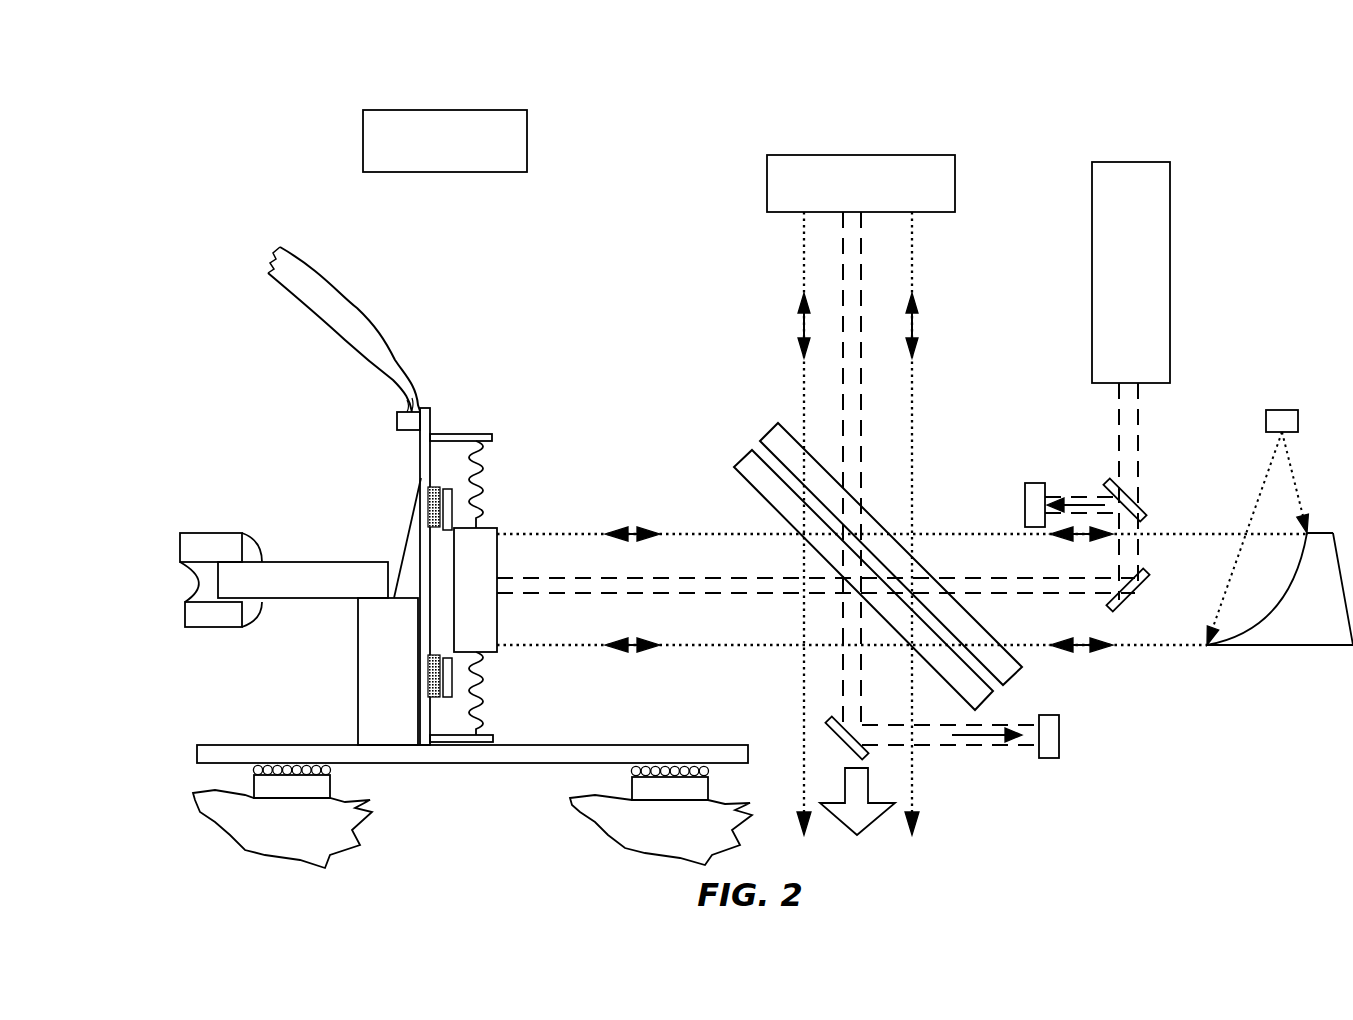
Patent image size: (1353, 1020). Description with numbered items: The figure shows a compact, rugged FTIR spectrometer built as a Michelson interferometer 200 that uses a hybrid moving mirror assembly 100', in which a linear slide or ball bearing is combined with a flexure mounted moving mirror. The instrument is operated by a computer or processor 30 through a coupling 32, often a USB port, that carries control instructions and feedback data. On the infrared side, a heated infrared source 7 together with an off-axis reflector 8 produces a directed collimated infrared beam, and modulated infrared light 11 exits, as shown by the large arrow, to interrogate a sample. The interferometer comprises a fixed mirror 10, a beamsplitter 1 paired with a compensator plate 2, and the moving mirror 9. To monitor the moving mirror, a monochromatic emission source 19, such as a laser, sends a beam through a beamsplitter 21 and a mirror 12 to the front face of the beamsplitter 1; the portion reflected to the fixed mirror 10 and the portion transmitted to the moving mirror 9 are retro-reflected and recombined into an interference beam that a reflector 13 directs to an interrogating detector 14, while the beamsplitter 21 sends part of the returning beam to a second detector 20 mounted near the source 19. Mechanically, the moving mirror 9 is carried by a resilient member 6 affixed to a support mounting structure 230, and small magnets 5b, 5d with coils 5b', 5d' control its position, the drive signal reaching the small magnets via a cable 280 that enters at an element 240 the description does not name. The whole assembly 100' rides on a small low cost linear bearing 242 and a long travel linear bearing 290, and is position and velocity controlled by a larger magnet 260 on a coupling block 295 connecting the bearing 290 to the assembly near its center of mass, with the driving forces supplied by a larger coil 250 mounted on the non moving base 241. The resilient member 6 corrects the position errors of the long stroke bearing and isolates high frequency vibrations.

The interferometer 200 is at (340, 55).
The hybrid moving mirror assembly 100' is at (176, 217).
The computer or processor 30 is at (445, 141).
The coupling 32 is at (545, 145).
The cable 280 is at (355, 310).
The mount block 240 is at (415, 411).
The support mounting structure 230 is at (467, 433).
The resilient member 6 is at (492, 472).
The small magnet 5b is at (447, 488).
The coil 5b' is at (405, 486).
The small magnet 5d is at (446, 696).
The coil 5d' is at (375, 649).
The moving mirror 9 is at (475, 590).
The coupling block 295 is at (388, 671).
The larger magnet 260 is at (305, 560).
The larger coil 250 is at (217, 527).
The long travel linear bearing 290 is at (610, 745).
The linear bearing 242 is at (332, 784).
The non moving base 241 is at (472, 829).
The fixed mirror 10 is at (861, 183).
The beamsplitter 1 is at (770, 432).
The compensator plate 2 is at (728, 456).
The monochromatic emission source 19 is at (1092, 275).
The beamsplitter 21 is at (1147, 505).
The mirror 12 is at (1140, 595).
The reflector 13 is at (835, 740).
The second detector 20 is at (1025, 500).
The interrogating detector 14 is at (1060, 737).
The modulated infrared light 11 is at (842, 812).
The heated infrared source 7 is at (1266, 415).
The off-axis reflector 8 is at (1280, 589).